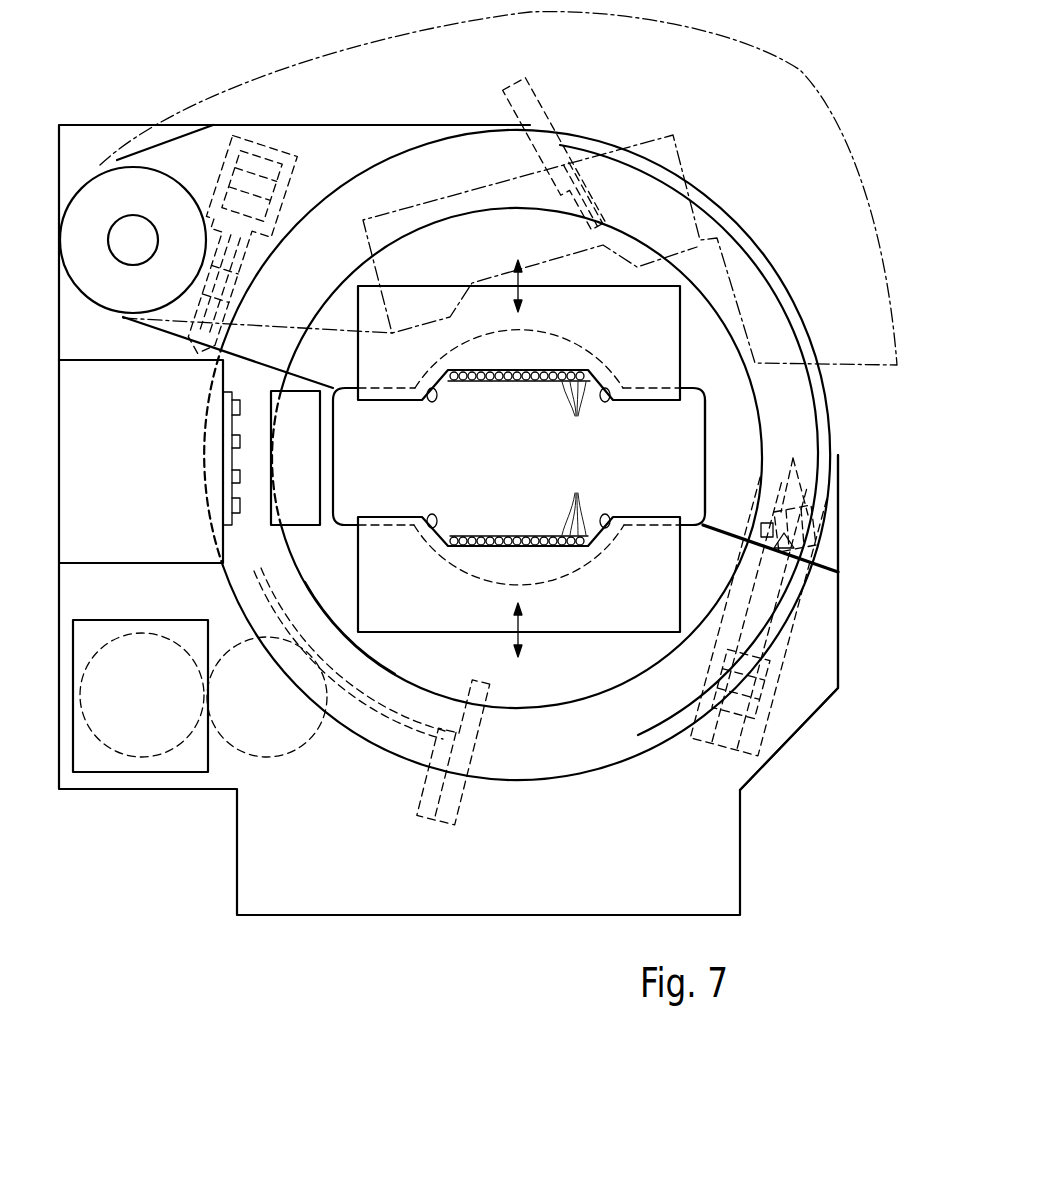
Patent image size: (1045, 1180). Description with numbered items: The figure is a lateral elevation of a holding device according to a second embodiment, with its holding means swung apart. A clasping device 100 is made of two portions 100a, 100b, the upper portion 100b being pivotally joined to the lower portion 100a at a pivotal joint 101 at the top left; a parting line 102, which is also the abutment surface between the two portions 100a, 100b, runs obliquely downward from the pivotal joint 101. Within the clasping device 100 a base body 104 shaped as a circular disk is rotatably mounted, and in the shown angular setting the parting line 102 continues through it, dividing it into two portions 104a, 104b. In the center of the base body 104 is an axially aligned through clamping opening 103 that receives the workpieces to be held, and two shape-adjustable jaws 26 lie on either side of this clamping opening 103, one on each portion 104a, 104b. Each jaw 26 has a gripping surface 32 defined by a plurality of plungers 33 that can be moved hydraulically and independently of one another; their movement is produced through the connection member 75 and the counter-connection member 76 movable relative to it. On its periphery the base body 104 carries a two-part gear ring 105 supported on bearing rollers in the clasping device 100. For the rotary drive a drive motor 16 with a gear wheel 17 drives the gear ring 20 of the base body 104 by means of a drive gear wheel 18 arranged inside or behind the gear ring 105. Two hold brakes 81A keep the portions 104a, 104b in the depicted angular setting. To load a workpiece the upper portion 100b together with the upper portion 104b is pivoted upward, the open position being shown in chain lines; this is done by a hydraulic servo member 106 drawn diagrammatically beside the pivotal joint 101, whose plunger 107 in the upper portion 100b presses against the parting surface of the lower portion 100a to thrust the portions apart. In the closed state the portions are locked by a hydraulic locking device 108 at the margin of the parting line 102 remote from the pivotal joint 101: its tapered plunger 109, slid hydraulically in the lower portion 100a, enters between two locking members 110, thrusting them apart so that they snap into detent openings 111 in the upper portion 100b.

The drive motor 16 is at (93, 760).
The gear wheel 17 is at (172, 752).
The drive gear wheel 18 is at (295, 753).
The gear ring 20 is at (430, 735).
The shape-adjustable jaw 26 is at (650, 339).
The gripping surface 32 is at (491, 386).
The plunger 33 is at (570, 458).
The connection member 75 is at (308, 467).
The counter-connection member 76 is at (228, 487).
The hold brake 81A is at (534, 92).
The clasping device 100 is at (404, 930).
The lower portion of the clasping device 100a is at (805, 703).
The upper portion of the clasping device 100b is at (833, 538).
The pivotal joint 101 is at (123, 228).
The parting line 102 is at (705, 527).
The clamping opening 103 is at (550, 467).
The base body 104 is at (645, 748).
The lower portion of the base body 104a is at (510, 693).
The upper portion of the base body 104b is at (700, 338).
The gear ring 105 is at (598, 747).
The hydraulic servo member 106 is at (225, 153).
The plunger 107 is at (240, 247).
The hydraulic locking device 108 is at (798, 630).
The plunger 109 is at (780, 593).
The locking member 110 is at (788, 485).
The detent opening 111 is at (725, 534).